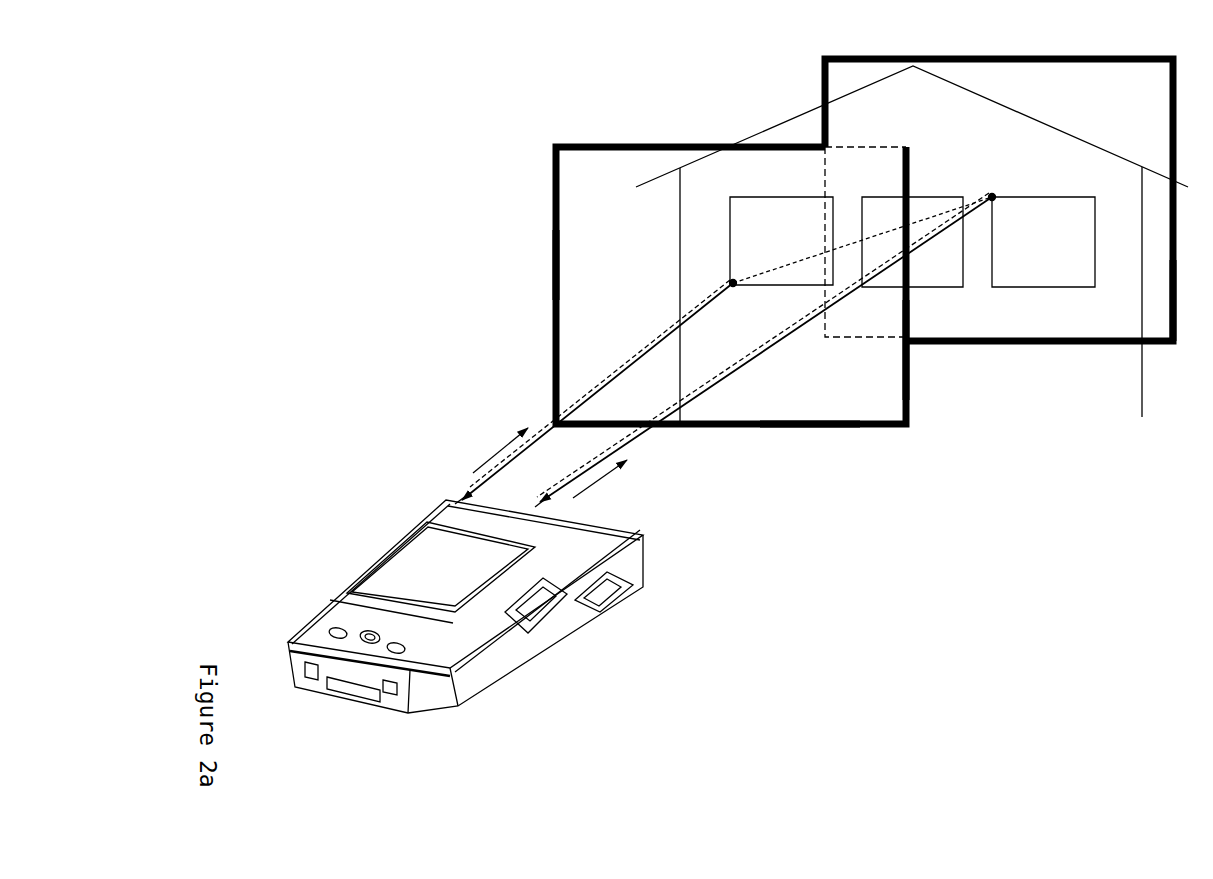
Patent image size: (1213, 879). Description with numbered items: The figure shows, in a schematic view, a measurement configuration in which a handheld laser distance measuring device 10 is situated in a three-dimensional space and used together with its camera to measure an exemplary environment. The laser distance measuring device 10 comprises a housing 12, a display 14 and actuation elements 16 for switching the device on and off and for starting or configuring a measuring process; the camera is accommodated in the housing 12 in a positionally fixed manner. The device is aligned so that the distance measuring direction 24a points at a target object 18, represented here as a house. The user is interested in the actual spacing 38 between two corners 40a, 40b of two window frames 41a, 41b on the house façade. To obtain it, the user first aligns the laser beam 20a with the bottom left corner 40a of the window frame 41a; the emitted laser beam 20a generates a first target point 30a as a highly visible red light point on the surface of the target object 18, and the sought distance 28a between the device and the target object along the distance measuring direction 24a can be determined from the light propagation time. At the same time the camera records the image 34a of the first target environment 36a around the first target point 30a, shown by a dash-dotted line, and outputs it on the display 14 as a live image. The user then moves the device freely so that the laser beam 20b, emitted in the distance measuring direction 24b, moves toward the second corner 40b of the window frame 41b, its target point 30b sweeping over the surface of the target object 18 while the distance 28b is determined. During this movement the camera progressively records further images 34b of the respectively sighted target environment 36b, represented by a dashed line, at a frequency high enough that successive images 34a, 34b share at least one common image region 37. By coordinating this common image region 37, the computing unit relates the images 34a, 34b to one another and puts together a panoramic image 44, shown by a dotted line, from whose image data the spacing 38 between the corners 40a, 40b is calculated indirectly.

The laser distance measuring device 10 is at (333, 442).
The housing 12 is at (545, 636).
The display 14 is at (378, 588).
The actuation elements 16 is at (323, 604).
The target object 18 is at (810, 128).
The laser beam 20a is at (563, 408).
The laser beam 20b is at (700, 402).
The distance measuring direction 24a is at (497, 449).
The distance measuring direction 24b is at (600, 483).
The distance 28a is at (458, 494).
The distance 28b is at (641, 435).
The first target point 30a is at (734, 292).
The target point 30b is at (992, 194).
The image 34a is at (552, 185).
The image 34b is at (1118, 345).
The first target environment 36a is at (806, 408).
The target environment 36b is at (1162, 320).
The common image region 37 is at (888, 320).
The spacing 38 is at (840, 245).
The corner 40a is at (728, 282).
The corner 40b is at (995, 196).
The window frame 41a is at (745, 215).
The window frame 41b is at (1053, 252).
The panoramic image 44 is at (553, 252).